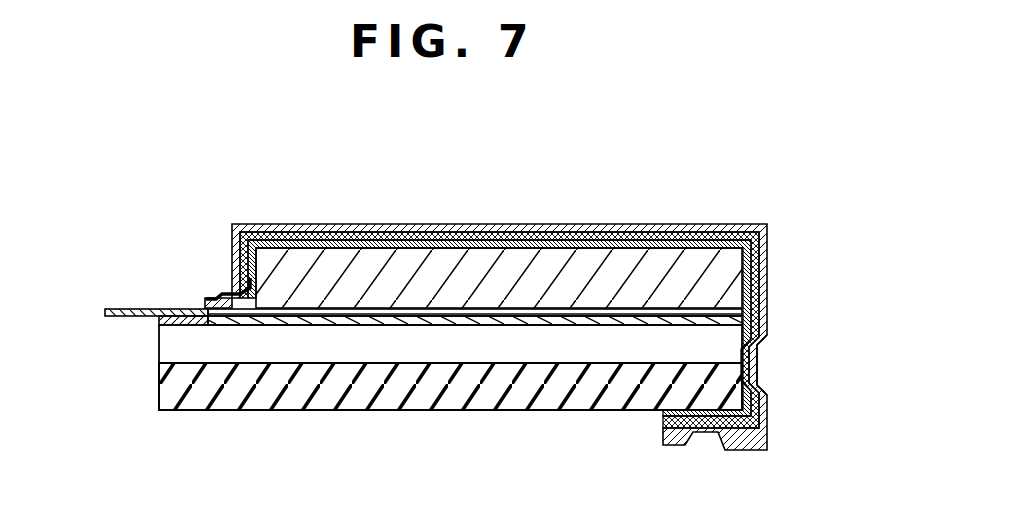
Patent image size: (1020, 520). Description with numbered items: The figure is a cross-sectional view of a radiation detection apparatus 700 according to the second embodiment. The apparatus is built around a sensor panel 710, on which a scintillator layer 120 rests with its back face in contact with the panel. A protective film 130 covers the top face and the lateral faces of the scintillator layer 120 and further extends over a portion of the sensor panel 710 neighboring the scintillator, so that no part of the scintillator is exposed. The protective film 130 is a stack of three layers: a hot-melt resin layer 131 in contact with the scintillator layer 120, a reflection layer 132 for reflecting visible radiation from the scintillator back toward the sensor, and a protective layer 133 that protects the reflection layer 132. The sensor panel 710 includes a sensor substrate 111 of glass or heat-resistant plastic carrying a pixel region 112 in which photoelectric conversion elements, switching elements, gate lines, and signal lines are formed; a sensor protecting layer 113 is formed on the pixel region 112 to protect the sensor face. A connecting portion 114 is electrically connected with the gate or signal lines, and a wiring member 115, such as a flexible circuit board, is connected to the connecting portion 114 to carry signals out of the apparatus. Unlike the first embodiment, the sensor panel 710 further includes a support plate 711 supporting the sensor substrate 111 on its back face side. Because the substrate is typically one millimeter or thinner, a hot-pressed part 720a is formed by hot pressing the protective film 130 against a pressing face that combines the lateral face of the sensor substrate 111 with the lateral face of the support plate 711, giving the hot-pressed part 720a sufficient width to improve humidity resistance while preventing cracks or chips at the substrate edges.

The radiation detection apparatus 700 is at (705, 176).
The protective film 130 is at (373, 167).
The hot-melt resin layer 131 is at (400, 228).
The reflection layer 132 is at (463, 236).
The protective layer 133 is at (520, 243).
The scintillator layer 120 is at (325, 265).
The hot-pressed part 720a is at (776, 342).
The sensor panel 710 is at (100, 307).
The wiring member 115 is at (134, 308).
The connecting portion 114 is at (181, 330).
The sensor protecting layer 113 is at (517, 313).
The pixel region 112 is at (440, 322).
The sensor substrate 111 is at (340, 350).
The support plate 711 is at (265, 400).